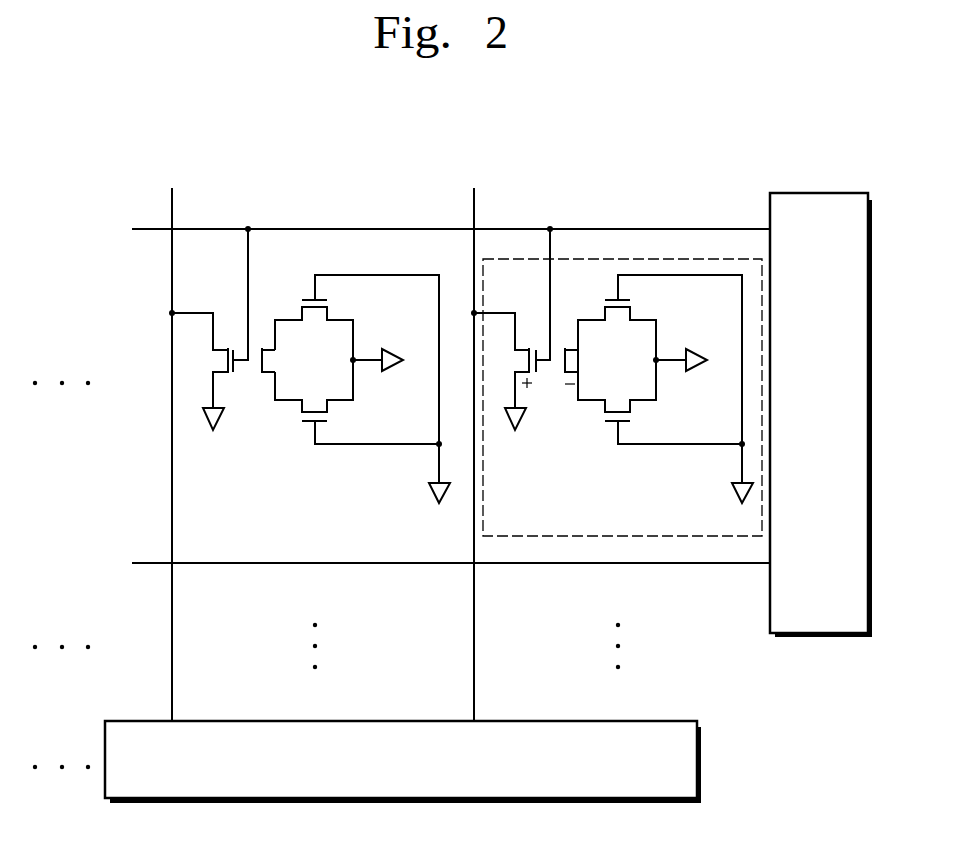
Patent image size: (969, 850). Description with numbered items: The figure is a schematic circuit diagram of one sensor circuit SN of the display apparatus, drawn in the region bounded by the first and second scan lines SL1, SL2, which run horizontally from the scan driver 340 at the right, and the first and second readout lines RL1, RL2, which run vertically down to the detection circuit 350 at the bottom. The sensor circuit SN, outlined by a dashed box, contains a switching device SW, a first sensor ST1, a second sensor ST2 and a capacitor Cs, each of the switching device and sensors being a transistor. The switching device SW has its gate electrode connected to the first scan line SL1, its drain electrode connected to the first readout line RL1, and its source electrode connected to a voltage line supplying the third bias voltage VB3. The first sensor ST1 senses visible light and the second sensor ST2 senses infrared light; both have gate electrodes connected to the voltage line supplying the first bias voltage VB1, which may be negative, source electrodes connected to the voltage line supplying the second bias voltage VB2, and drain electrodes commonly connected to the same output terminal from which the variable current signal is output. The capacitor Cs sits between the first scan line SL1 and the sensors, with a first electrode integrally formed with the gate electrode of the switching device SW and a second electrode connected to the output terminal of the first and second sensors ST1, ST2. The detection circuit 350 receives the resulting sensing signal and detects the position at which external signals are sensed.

The scan driver 340 is at (832, 638).
The detection circuit 350 is at (658, 721).
The sensor circuit SN is at (642, 258).
The switching device SW is at (512, 317).
The first sensor ST1 is at (660, 359).
The second sensor ST2 is at (661, 403).
The capacitor Cs is at (575, 397).
The first bias voltage VB1 is at (741, 487).
The second bias voltage VB2 is at (695, 362).
The third bias voltage VB3 is at (512, 434).
The first scan line SL1 is at (451, 215).
The second scan line SL2 is at (451, 579).
The first readout line RL1 is at (493, 454).
The second readout line RL2 is at (190, 454).